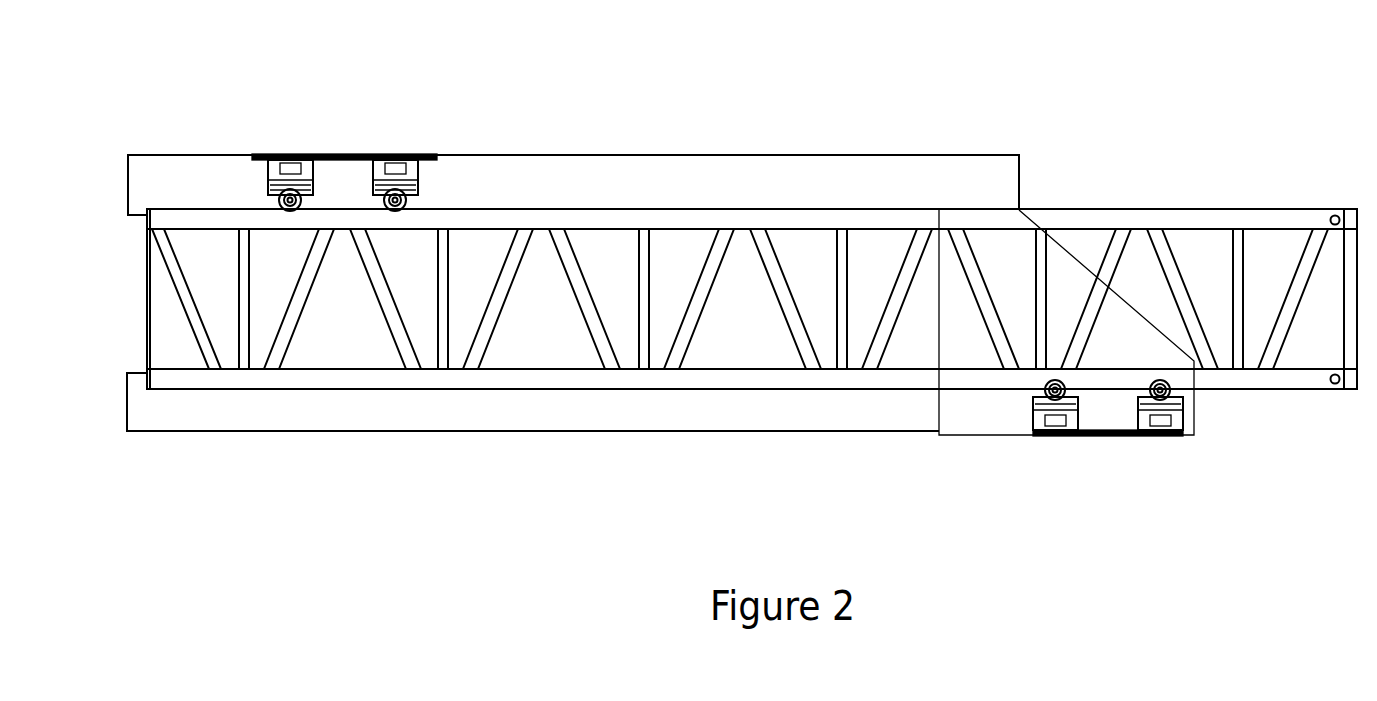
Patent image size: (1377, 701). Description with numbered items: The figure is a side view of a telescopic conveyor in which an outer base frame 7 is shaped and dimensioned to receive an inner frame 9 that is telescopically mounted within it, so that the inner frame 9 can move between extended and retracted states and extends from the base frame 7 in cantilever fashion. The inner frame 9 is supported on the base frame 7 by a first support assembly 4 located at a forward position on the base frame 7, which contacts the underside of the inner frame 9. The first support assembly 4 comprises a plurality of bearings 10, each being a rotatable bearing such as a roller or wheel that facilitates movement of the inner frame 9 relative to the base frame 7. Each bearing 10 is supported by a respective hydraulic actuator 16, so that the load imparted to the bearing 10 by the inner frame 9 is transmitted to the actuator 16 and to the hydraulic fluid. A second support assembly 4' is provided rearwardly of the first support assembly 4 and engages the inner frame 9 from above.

The first support assembly 4 is at (1114, 471).
The second support assembly 4' is at (344, 106).
The outer base frame 7 is at (893, 170).
The inner frame 9 is at (1210, 215).
The bearing 10 is at (275, 203).
The hydraulic actuator 16 is at (1058, 410).